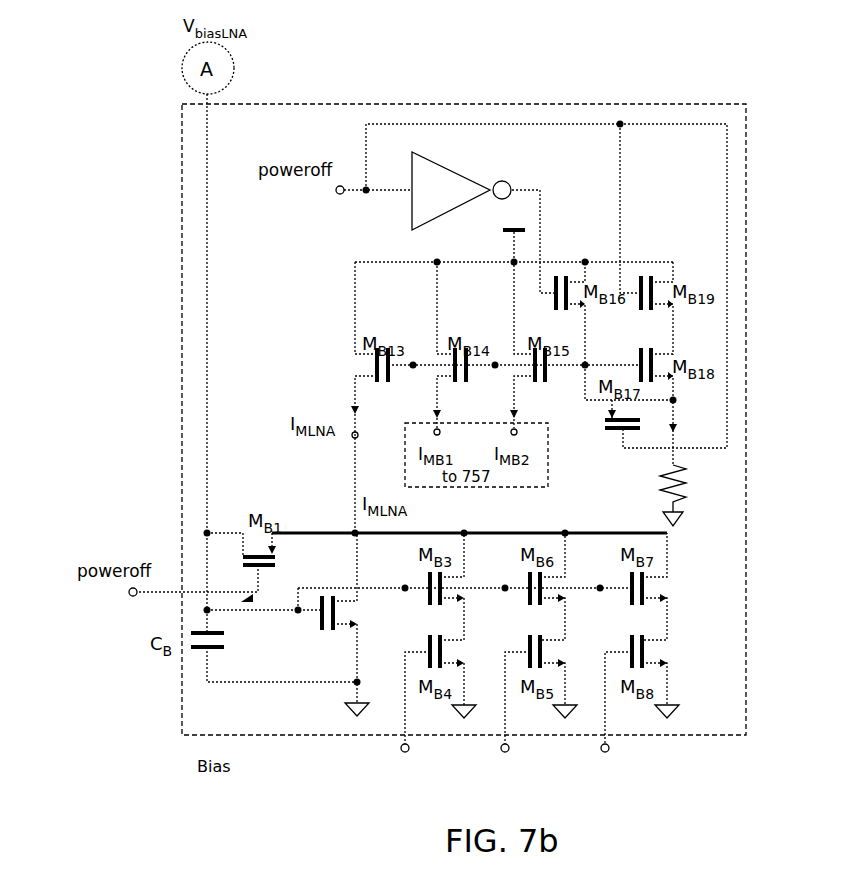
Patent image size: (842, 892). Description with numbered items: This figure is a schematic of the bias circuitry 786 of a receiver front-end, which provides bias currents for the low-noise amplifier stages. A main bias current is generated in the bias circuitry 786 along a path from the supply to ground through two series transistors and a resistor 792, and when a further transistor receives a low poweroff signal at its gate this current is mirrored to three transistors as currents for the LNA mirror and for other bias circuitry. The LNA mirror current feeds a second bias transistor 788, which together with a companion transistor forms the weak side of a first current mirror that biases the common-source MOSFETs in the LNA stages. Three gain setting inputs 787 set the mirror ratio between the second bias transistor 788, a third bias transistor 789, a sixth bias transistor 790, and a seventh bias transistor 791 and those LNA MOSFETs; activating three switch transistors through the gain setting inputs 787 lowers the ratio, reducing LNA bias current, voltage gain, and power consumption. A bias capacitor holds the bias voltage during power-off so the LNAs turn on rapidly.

The bias circuitry 786 is at (740, 105).
The gain setting inputs G[0]-G[2] 787 is at (536, 784).
The transistor MB2 788 is at (318, 628).
The transistor MB3 789 is at (444, 540).
The transistor MB6 790 is at (545, 540).
The transistor MB7 791 is at (662, 530).
The resistor 792 is at (700, 482).